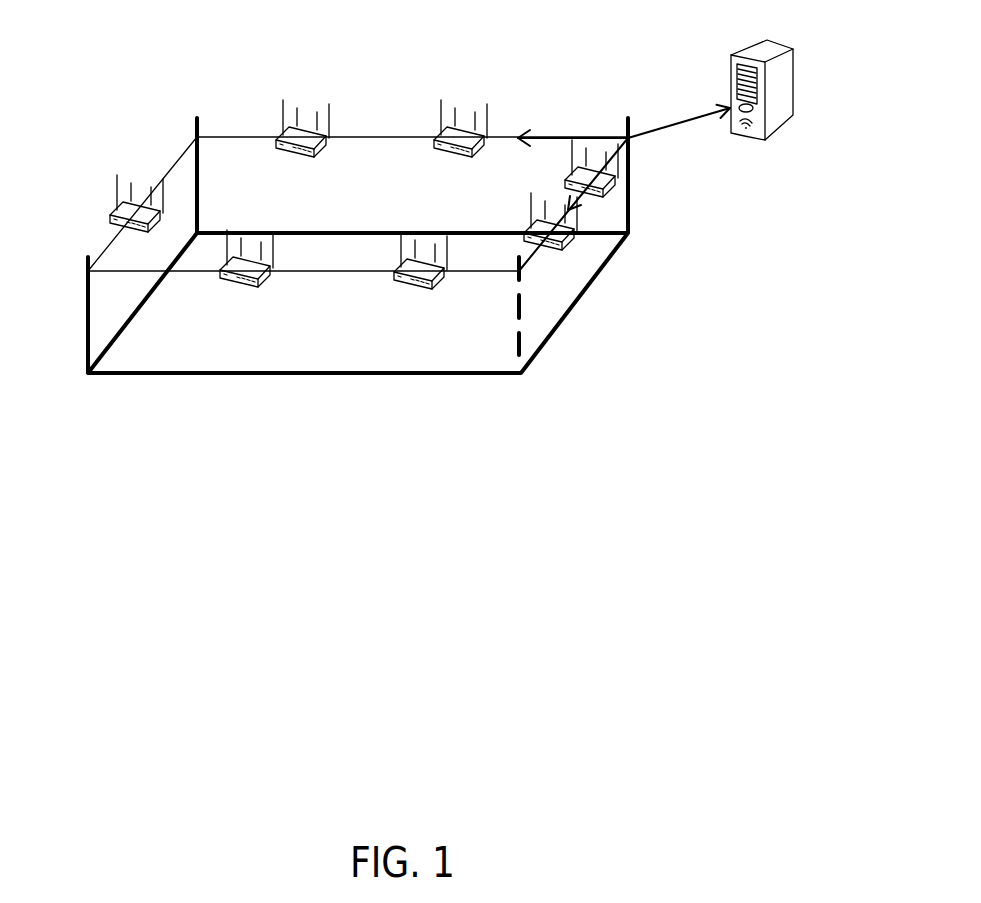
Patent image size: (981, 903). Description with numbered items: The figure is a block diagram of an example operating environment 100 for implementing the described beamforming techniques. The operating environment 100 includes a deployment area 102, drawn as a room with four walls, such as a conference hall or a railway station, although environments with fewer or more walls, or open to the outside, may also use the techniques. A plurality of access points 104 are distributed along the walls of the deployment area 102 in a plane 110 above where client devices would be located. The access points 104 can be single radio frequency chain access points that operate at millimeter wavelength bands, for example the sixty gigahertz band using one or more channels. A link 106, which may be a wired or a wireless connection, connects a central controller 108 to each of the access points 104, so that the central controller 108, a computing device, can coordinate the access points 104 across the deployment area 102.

The operating environment 100 is at (422, 812).
The deployment area 102 is at (110, 343).
The access points 104 is at (107, 205).
The link 106 is at (680, 118).
The central controller 108 is at (747, 47).
The plane 110 is at (182, 153).